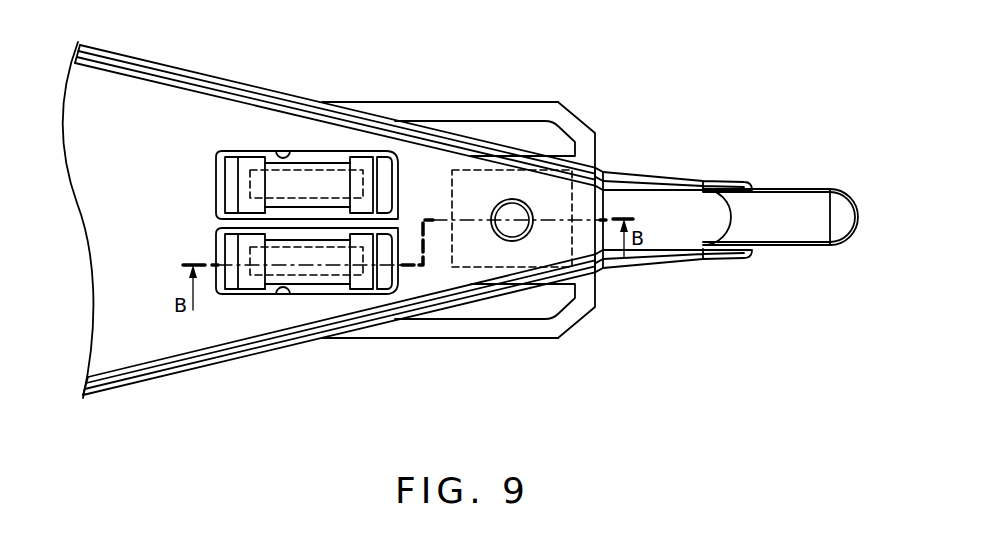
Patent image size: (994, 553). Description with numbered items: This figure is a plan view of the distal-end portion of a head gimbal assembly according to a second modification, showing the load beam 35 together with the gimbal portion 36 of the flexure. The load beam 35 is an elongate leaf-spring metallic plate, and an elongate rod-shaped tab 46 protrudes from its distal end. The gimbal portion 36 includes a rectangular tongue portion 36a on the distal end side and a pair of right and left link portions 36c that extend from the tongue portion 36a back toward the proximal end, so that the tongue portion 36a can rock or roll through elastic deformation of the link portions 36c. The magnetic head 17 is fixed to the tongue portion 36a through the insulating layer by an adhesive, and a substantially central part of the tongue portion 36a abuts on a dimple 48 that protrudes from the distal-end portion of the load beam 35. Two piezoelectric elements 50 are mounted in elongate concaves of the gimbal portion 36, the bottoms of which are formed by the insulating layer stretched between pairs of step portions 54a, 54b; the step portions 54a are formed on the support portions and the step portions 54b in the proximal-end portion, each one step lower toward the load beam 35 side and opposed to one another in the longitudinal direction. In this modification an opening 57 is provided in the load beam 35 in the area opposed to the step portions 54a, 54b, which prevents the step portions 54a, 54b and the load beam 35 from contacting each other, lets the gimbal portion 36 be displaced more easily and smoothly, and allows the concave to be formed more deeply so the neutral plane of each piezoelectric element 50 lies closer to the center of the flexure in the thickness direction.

The load beam 35 is at (117, 100).
The gimbal portion 36 is at (474, 354).
The tongue portion 36a is at (550, 252).
The link portions 36c is at (446, 103).
The magnetic head 17 is at (476, 187).
The dimple 48 is at (516, 207).
The tab 46 is at (797, 231).
The piezoelectric elements 50 is at (312, 178).
The step portions 54a is at (362, 163).
The step portions 54b is at (253, 165).
The opening 57 is at (279, 148).